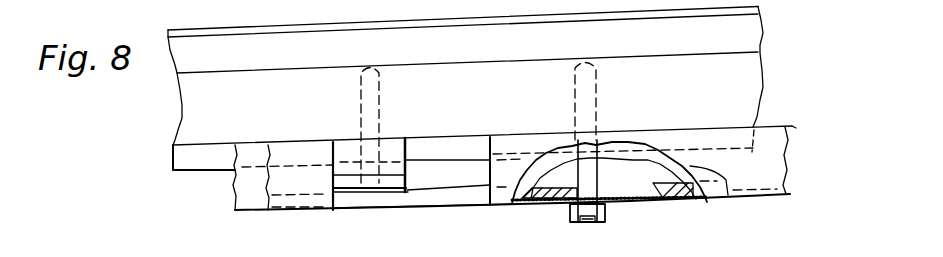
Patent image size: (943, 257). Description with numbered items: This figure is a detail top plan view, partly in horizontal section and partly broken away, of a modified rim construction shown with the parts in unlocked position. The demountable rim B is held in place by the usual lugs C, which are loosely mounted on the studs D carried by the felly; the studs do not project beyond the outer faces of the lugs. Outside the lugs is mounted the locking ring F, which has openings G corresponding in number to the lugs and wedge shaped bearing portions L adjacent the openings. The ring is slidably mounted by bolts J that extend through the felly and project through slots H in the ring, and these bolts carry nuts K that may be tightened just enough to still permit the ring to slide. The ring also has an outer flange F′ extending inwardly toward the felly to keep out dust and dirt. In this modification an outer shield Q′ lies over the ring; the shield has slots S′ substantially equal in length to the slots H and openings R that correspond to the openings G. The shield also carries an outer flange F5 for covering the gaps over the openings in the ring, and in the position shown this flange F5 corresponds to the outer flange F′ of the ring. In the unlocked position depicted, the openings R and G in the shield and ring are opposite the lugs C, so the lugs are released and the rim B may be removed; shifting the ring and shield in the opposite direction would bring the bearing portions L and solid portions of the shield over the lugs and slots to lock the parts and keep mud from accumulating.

The demountable rim B is at (465, 76).
The lugs C is at (393, 148).
The studs D is at (360, 99).
The bolts J is at (575, 105).
The wedge shaped bearing portions L is at (456, 193).
The openings G is at (392, 196).
The openings R is at (403, 208).
The outer shield Q′ is at (473, 205).
The nuts K is at (576, 215).
The slots H is at (633, 189).
The slots S′ is at (648, 201).
The locking ring F is at (669, 197).
The outer flange F′ is at (247, 183).
The outer flange F5 is at (767, 152).